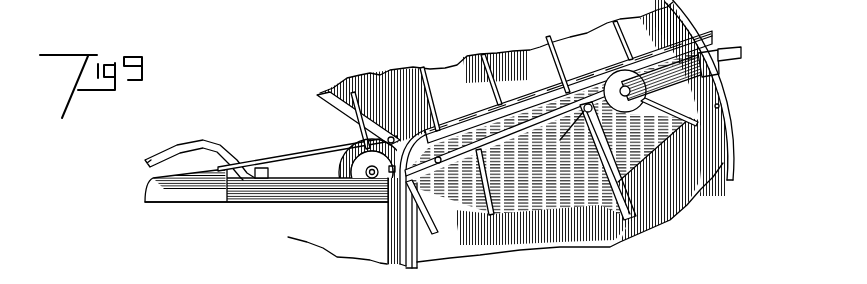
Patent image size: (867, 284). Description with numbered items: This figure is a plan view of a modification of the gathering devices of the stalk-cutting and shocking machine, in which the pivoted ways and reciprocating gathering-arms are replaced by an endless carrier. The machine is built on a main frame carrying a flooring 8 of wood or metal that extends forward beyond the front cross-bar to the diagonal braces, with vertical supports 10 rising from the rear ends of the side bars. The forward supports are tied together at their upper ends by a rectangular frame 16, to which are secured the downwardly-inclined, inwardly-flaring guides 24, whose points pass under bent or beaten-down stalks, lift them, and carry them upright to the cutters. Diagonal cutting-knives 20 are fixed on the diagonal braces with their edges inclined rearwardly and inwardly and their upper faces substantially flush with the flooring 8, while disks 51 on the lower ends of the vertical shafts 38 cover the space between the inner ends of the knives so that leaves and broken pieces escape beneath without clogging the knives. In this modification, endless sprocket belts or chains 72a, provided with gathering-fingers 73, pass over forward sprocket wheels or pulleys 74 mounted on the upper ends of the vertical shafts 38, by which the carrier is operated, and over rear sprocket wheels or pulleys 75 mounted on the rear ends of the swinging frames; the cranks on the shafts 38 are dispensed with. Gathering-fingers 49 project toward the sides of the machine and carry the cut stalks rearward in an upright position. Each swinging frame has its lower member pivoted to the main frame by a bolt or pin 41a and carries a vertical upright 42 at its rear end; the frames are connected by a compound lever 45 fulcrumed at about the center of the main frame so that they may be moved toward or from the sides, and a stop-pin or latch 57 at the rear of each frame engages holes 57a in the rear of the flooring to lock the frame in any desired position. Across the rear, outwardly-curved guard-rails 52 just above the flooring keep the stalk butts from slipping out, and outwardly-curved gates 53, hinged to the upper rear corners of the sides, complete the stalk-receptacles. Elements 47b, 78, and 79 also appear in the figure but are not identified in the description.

The flooring 8 is at (464, 98).
The vertical supports 10 is at (703, 90).
The rectangular frame 16 is at (308, 221).
The diagonal cutting-knives 20 is at (347, 118).
The guides 24 is at (206, 154).
The vertical shafts 38 is at (371, 180).
The bolt or pin 41a is at (509, 131).
The vertical upright 42 is at (720, 67).
The compound lever 45 is at (660, 180).
The link arm 47b is at (598, 161).
The gathering-fingers 49 is at (548, 69).
The disks 51 is at (335, 163).
The guard-rails 52 is at (725, 138).
The gates 53 is at (708, 98).
The stop-pin or latch 57 is at (707, 79).
The holes 57a is at (720, 107).
The endless sprocket belts or chains 72a is at (503, 182).
The gathering-fingers 73 is at (440, 231).
The forward sprocket wheels or pulleys 74 is at (388, 138).
The rear sprocket wheels or pulleys 75 is at (618, 66).
The base body 78 is at (266, 197).
The slide bar 79 is at (307, 151).